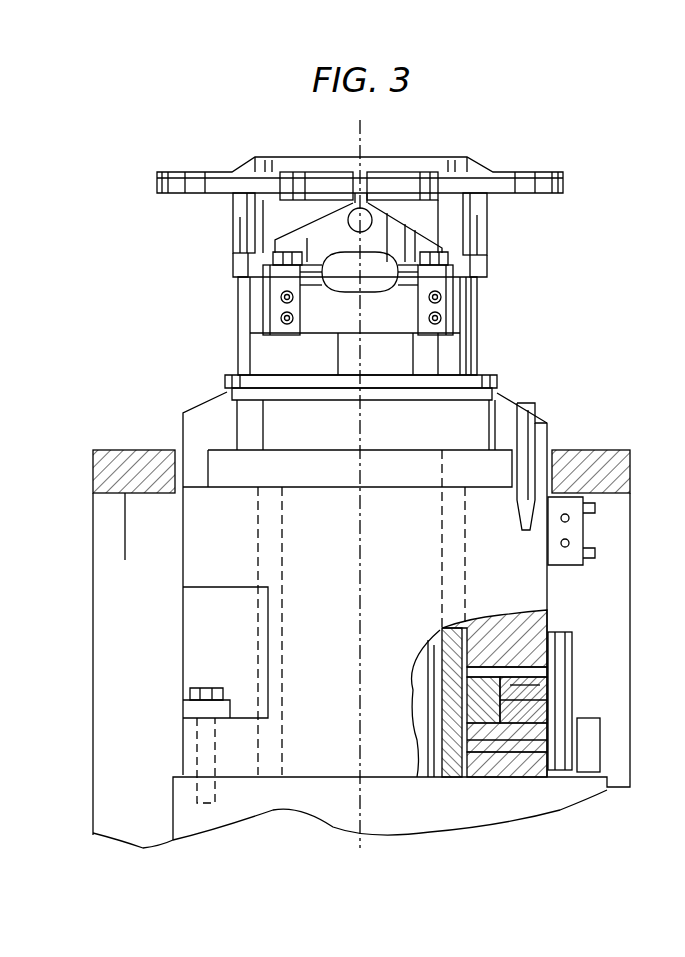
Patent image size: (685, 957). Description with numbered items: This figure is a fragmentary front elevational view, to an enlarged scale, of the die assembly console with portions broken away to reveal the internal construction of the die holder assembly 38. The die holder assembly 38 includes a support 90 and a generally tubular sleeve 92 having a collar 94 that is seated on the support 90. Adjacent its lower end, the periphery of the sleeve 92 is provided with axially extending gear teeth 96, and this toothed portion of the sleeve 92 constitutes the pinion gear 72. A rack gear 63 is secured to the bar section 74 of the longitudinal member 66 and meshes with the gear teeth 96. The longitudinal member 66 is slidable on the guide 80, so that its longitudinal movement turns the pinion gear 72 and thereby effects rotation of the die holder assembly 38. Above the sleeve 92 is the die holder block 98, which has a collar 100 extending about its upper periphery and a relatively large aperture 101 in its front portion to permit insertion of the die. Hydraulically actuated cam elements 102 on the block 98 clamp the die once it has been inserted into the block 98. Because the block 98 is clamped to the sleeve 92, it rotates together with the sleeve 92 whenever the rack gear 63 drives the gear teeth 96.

The die holder assembly 38 is at (557, 612).
The rack gear 63 is at (432, 672).
The longitudinal member 66 is at (510, 712).
The pinion gear 72 is at (462, 723).
The bar section 74 is at (468, 712).
The guide 80 is at (533, 750).
The support 90 is at (523, 597).
The sleeve 92 is at (462, 578).
The collar 94 is at (487, 467).
The gear teeth 96 is at (442, 633).
The die holder block 98 is at (447, 353).
The collar 100 is at (520, 172).
The aperture 101 is at (292, 167).
The hydraulically actuated cam elements 102 is at (397, 188).